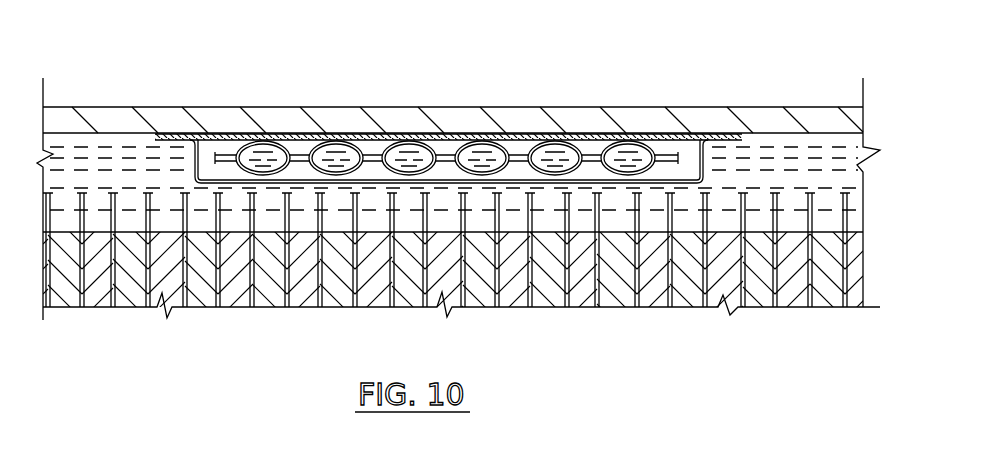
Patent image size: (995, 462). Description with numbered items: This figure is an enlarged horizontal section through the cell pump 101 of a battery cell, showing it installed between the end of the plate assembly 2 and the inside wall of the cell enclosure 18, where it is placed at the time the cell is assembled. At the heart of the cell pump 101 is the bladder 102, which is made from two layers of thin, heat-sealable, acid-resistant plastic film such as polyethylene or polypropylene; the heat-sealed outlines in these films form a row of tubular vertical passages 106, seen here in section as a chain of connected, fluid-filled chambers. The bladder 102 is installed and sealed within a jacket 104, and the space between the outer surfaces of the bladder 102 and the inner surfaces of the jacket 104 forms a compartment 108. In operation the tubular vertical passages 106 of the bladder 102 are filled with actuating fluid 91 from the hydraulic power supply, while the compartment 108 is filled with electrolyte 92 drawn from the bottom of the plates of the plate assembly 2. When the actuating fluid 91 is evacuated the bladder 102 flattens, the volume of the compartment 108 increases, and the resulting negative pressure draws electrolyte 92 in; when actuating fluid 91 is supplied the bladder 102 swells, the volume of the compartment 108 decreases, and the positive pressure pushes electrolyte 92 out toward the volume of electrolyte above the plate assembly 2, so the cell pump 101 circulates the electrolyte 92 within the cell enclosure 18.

The plate assembly 2 is at (857, 252).
The cell enclosure 18 is at (622, 107).
The actuating fluid 91 is at (494, 158).
The electrolyte 92 is at (783, 158).
The cell pump 101 is at (713, 200).
The bladder 102 is at (377, 143).
The jacket 104 is at (187, 165).
The tubular vertical passages 106 is at (330, 157).
The compartment 108 is at (207, 150).